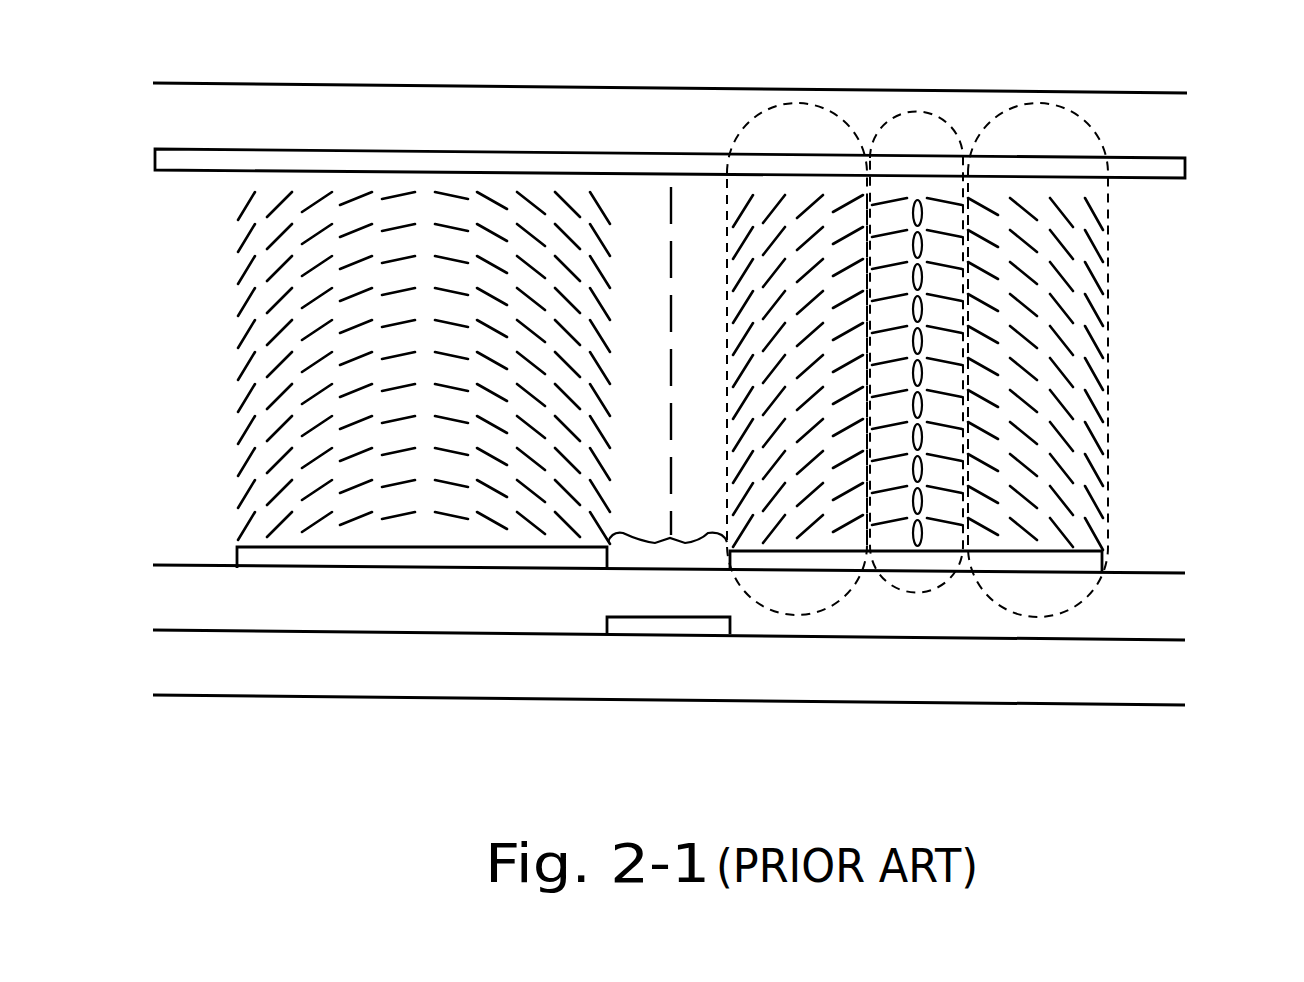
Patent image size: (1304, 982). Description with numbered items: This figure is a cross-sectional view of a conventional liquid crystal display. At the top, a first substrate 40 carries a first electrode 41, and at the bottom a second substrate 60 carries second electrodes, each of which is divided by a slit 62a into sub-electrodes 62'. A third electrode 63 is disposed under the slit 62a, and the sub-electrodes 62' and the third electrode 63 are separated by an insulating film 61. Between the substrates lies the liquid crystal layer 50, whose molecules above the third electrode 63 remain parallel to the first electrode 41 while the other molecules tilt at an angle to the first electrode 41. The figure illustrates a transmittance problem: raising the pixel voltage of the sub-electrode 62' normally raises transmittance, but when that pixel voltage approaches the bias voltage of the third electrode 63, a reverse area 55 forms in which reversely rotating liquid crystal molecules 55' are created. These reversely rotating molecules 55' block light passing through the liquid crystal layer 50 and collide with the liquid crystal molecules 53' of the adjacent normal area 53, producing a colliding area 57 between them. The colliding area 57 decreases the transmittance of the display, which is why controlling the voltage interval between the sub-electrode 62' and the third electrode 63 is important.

The first substrate 40 is at (528, 134).
The first electrode 41 is at (1160, 167).
The liquid crystal layer 50 is at (1153, 338).
The reverse area 55 is at (797, 447).
The reversely rotating liquid crystal molecules 55' is at (834, 273).
The colliding area 57 is at (917, 575).
The normal area 53 is at (1038, 440).
The liquid crystal molecules in the normal area 53' is at (996, 285).
The slit 62a is at (667, 518).
The sub-electrode 62' is at (751, 547).
The insulating film 61 is at (1140, 620).
The third electrode 63 is at (703, 627).
The second substrate 60 is at (1002, 686).